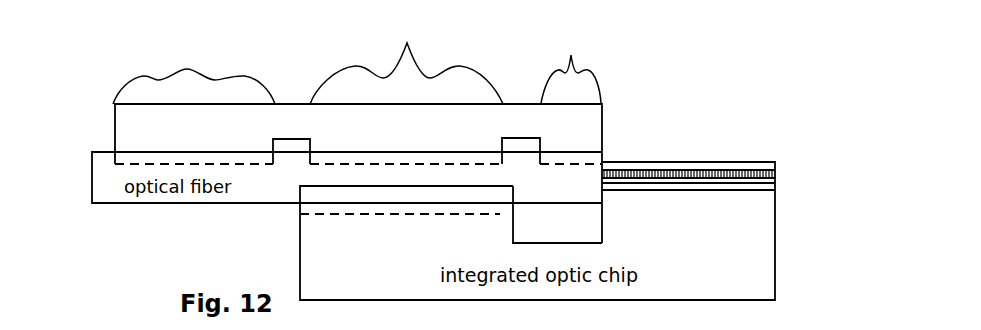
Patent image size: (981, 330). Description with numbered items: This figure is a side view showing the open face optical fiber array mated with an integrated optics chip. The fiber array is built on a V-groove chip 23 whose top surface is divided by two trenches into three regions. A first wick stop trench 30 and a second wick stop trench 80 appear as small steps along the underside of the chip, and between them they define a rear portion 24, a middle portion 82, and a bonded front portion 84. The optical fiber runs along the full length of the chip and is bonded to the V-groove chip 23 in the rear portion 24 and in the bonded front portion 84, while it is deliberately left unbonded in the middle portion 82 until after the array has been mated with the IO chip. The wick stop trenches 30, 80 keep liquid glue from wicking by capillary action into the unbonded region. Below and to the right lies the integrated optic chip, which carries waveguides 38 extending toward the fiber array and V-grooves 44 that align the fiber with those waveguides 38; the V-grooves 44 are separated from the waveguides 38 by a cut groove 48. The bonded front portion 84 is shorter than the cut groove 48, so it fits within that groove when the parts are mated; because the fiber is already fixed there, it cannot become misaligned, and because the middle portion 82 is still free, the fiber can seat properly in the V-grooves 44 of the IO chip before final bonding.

The V-groove chip 23 is at (255, 140).
The rear portion 24 is at (194, 74).
The wick stop trench 30 is at (288, 104).
The waveguides 38 is at (693, 172).
The V-grooves 44 is at (373, 215).
The cut groove 48 is at (564, 235).
The second wick stop trench 80 is at (517, 104).
The middle portion 82 is at (406, 62).
The bonded front portion 84 is at (571, 68).